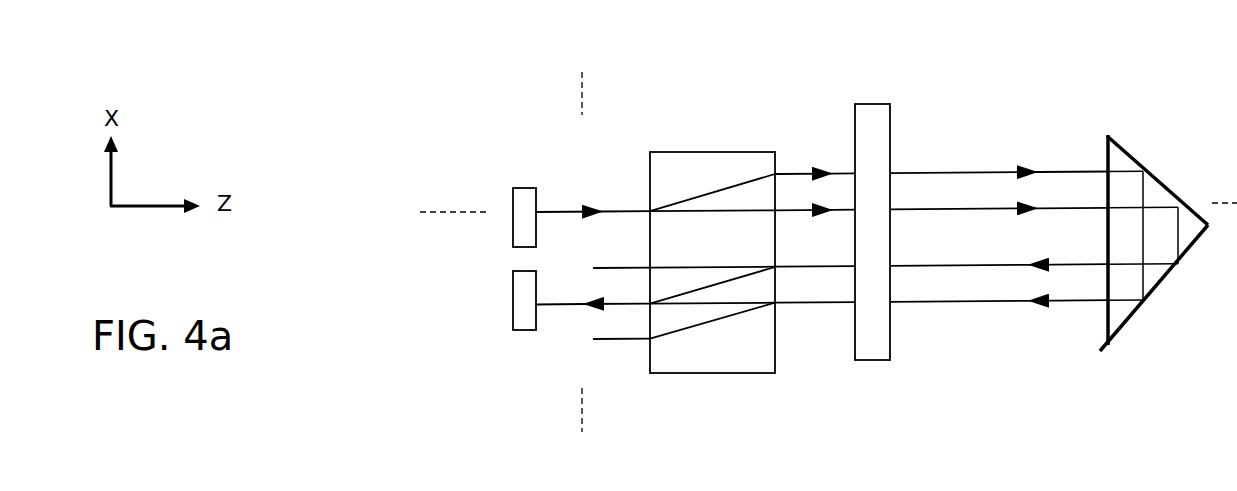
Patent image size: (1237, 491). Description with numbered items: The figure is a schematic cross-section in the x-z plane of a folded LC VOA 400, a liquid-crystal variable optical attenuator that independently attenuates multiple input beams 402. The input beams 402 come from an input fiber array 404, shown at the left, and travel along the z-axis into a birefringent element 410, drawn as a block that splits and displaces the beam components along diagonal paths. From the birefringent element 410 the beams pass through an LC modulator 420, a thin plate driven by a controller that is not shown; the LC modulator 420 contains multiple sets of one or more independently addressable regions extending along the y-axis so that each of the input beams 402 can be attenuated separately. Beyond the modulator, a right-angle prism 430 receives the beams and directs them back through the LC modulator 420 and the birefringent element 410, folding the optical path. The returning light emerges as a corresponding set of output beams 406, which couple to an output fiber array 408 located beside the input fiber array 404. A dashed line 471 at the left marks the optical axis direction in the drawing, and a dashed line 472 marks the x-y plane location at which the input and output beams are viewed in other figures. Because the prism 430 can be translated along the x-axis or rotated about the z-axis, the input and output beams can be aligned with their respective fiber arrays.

The folded LC VOA 400 is at (420, 141).
The input beams 402 is at (604, 211).
The input fiber array 404 is at (524, 188).
The output beams 406 is at (570, 304).
The output fiber array 408 is at (523, 330).
The birefringent element 410 is at (672, 152).
The LC modulator 420 is at (867, 104).
The right-angle prism 430 is at (1167, 187).
The optical axis 471 is at (800, 211).
The line 472 is at (577, 235).